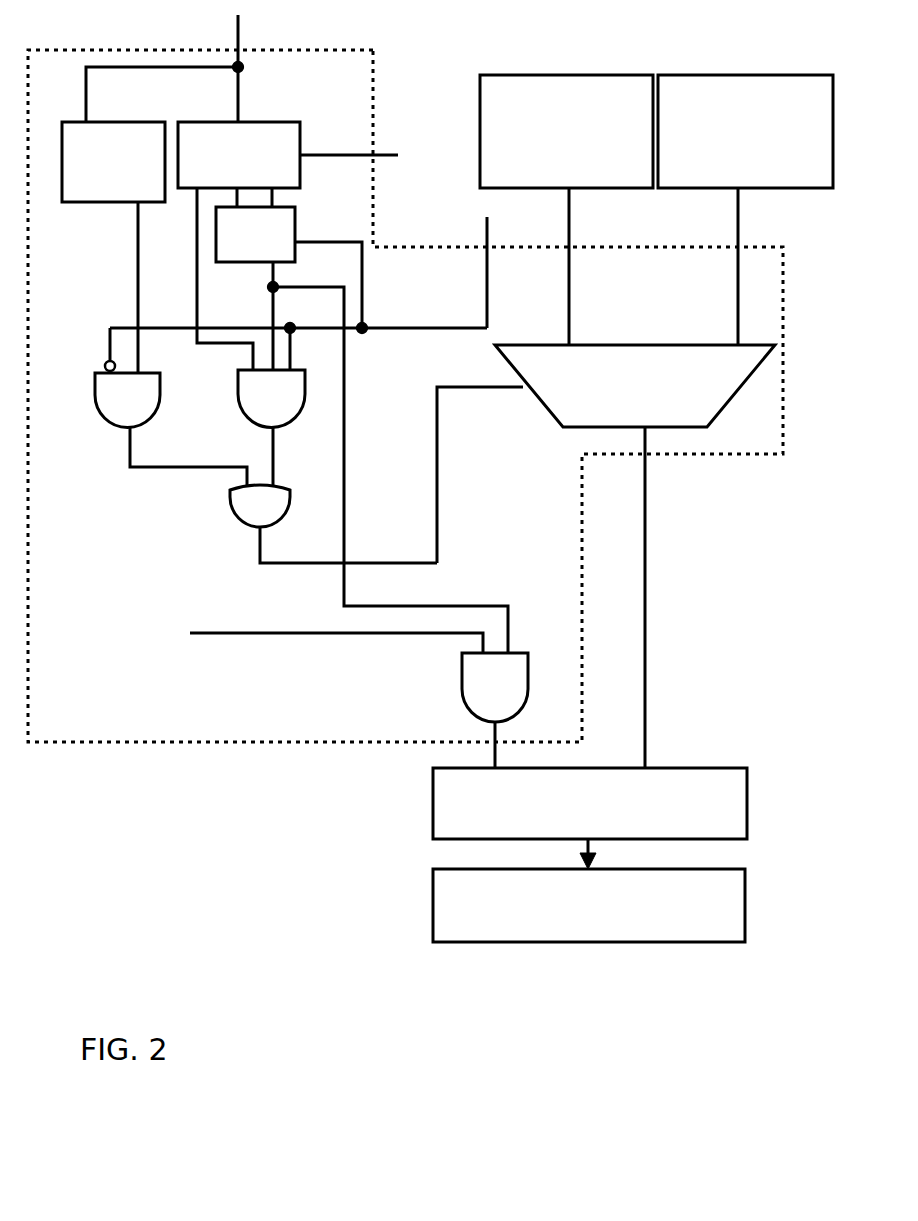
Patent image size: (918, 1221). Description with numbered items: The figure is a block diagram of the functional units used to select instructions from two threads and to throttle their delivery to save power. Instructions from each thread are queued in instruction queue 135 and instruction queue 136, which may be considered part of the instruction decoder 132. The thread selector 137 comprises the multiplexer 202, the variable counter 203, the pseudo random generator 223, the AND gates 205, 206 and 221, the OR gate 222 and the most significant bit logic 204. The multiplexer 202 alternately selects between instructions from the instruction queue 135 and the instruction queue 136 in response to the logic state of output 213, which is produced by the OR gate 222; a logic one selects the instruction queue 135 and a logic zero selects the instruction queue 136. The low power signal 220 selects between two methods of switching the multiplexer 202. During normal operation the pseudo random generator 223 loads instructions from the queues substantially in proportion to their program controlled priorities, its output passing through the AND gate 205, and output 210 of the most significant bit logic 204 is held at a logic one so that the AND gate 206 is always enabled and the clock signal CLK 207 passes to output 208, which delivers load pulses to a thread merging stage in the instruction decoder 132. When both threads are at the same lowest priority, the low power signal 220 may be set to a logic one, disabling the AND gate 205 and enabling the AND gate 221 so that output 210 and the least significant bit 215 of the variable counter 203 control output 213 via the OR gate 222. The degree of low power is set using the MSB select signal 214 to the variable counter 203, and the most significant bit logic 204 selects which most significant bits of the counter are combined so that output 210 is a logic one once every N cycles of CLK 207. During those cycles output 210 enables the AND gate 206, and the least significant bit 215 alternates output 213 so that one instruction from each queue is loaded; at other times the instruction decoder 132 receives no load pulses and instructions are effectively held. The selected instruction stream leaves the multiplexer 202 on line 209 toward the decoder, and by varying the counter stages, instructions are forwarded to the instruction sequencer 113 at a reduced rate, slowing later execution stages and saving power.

The instruction sequencer 113 is at (747, 890).
The instruction decoder 132 is at (728, 768).
The instruction queue 135 is at (566, 210).
The instruction queue 136 is at (745, 210).
The thread selector 137 is at (763, 392).
The multiplexer 202 is at (635, 386).
The variable counter 203 is at (277, 120).
The most significant bit logic 204 is at (297, 230).
The AND gate 205 is at (95, 395).
The AND gate 206 is at (520, 652).
The clock signal 207 is at (240, 43).
The output 208 is at (495, 768).
The multiplexer output 209 is at (647, 710).
The output 210 is at (473, 603).
The output 213 is at (462, 388).
The MSB select signal 214 is at (383, 155).
The least significant bit 215 is at (195, 300).
The low power signal 220 is at (483, 228).
The AND gate 221 is at (237, 403).
The OR gate 222 is at (230, 508).
The pseudo random generator 223 is at (108, 120).